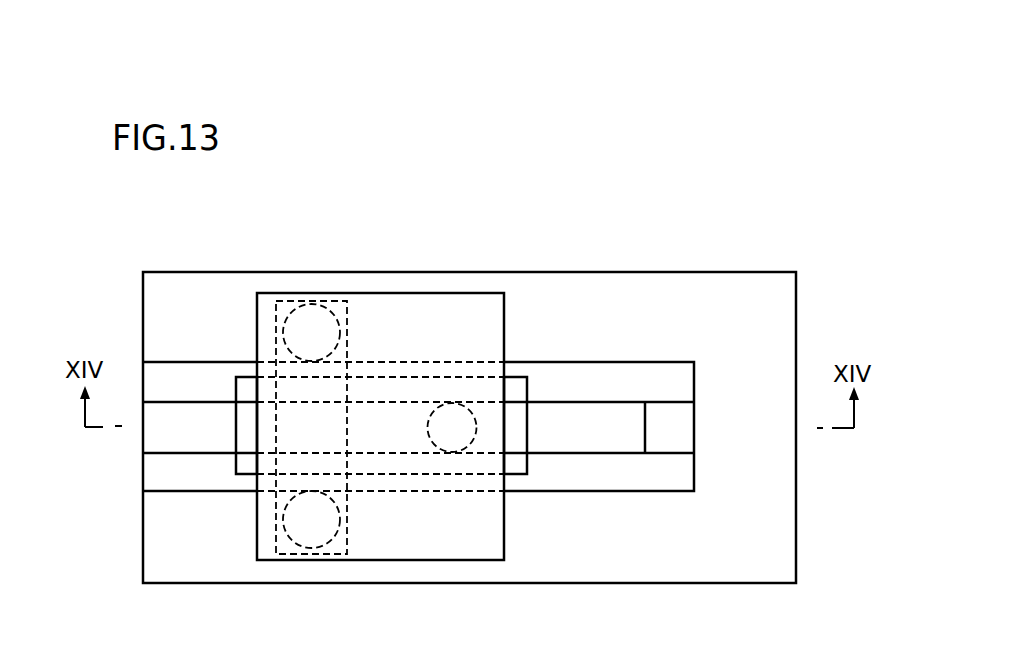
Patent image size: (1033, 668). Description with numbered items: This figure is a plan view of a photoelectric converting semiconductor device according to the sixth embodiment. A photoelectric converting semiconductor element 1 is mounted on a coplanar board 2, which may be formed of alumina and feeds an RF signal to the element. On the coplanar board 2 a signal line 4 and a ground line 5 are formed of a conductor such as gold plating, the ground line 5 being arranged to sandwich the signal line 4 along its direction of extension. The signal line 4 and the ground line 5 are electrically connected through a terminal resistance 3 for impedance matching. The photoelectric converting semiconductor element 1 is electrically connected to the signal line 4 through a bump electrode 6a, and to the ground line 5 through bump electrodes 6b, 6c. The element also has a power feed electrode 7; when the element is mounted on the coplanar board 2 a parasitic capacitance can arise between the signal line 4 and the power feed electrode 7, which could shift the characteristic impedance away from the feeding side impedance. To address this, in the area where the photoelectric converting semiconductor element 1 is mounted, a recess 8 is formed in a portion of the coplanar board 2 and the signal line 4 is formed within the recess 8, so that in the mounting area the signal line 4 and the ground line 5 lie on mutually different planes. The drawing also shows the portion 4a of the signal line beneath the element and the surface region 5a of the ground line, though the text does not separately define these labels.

The photoelectric converting semiconductor element 1 is at (487, 293).
The coplanar board 2 is at (596, 310).
The terminal resistance 3 is at (670, 433).
The signal line 4 is at (168, 428).
The guide rail hidden portion 4a is at (375, 427).
The ground line 5 is at (183, 320).
The table upper surface 5a is at (433, 332).
The bump electrode 6a is at (453, 427).
The bump electrode 6b is at (312, 333).
The bump electrode 6c is at (312, 520).
The power feed electrode 7 is at (348, 362).
The recess 8 is at (423, 473).